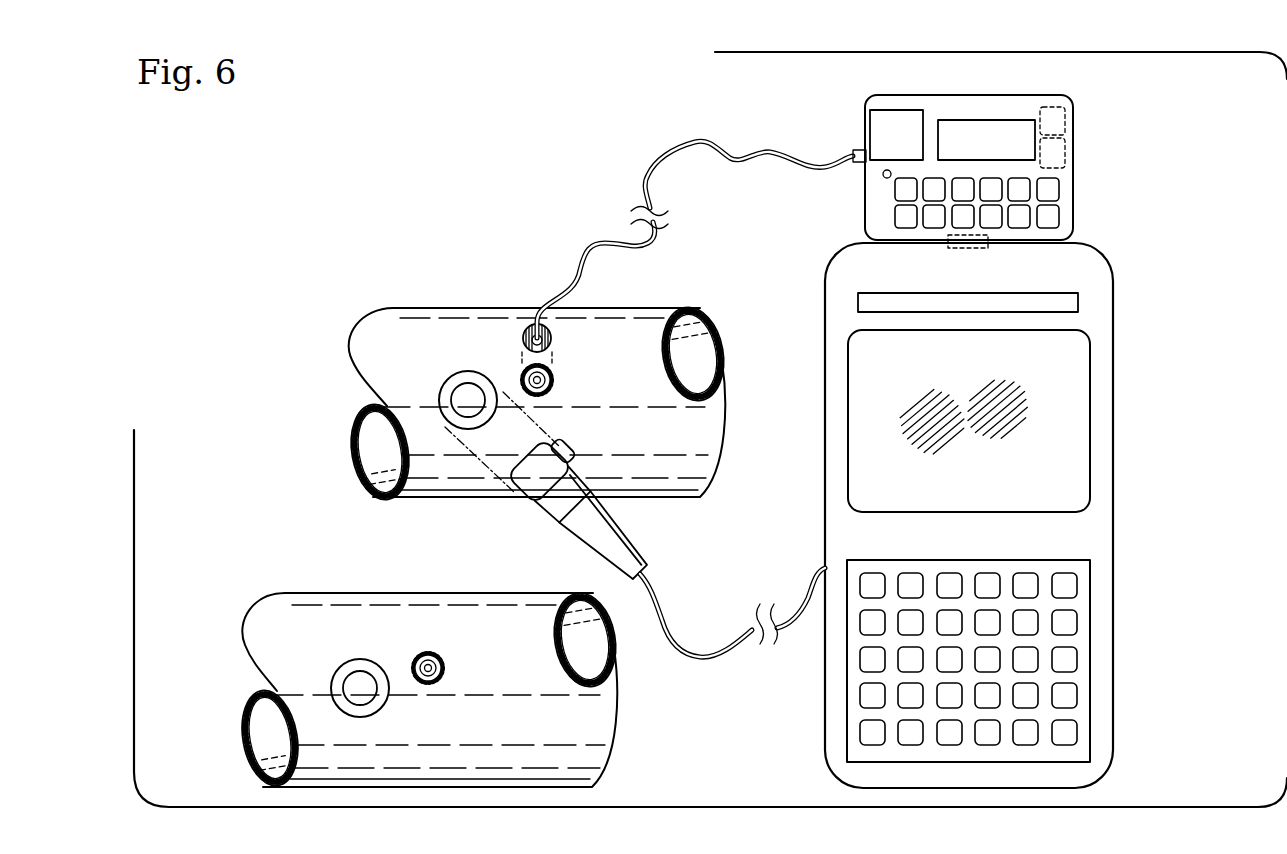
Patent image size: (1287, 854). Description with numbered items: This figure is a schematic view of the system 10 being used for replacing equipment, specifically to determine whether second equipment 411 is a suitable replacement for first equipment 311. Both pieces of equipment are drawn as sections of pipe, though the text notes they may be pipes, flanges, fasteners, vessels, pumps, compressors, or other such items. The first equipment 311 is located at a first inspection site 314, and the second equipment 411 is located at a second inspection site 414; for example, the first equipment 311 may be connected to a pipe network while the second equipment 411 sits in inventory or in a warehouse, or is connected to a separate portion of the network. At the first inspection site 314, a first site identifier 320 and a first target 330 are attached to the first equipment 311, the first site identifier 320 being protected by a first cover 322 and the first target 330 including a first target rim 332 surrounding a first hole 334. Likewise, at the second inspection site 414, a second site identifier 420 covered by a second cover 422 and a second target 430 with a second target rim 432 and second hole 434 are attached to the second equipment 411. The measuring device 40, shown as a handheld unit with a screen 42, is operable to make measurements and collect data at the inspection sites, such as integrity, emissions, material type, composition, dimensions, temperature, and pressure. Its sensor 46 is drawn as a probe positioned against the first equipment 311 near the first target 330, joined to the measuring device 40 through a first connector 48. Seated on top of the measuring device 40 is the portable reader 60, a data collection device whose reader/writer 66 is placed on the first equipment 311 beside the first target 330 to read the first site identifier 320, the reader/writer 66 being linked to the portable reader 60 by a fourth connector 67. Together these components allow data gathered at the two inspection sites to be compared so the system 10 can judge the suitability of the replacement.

The system 10 is at (1226, 114).
The measuring device 40 is at (1004, 515).
The screen 42 is at (1028, 485).
The sensor 46 is at (553, 520).
The first connector 48 is at (700, 657).
The portable reader 60 is at (1086, 112).
The reader/writer 66 is at (553, 338).
The fourth connector 67 is at (638, 192).
The first equipment 311 is at (523, 382).
The first inspection site 314 is at (506, 313).
The first site identifier 320 is at (572, 401).
The first cover 322 is at (557, 383).
The first target 330 is at (456, 351).
The first target rim 332 is at (446, 398).
The first hole 334 is at (470, 395).
The second equipment 411 is at (410, 670).
The second inspection site 414 is at (399, 603).
The second site identifier 420 is at (463, 691).
The second cover 422 is at (447, 672).
The second target 430 is at (349, 640).
The second target rim 432 is at (337, 686).
The second hole 434 is at (365, 683).